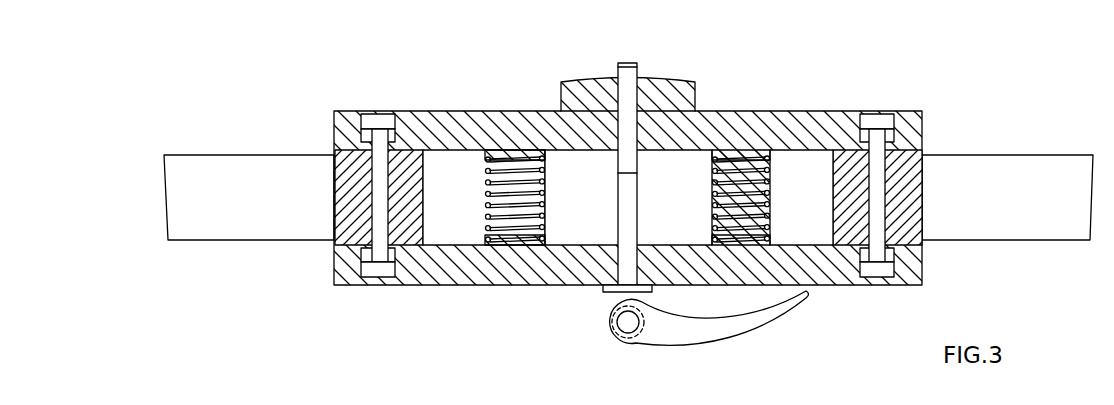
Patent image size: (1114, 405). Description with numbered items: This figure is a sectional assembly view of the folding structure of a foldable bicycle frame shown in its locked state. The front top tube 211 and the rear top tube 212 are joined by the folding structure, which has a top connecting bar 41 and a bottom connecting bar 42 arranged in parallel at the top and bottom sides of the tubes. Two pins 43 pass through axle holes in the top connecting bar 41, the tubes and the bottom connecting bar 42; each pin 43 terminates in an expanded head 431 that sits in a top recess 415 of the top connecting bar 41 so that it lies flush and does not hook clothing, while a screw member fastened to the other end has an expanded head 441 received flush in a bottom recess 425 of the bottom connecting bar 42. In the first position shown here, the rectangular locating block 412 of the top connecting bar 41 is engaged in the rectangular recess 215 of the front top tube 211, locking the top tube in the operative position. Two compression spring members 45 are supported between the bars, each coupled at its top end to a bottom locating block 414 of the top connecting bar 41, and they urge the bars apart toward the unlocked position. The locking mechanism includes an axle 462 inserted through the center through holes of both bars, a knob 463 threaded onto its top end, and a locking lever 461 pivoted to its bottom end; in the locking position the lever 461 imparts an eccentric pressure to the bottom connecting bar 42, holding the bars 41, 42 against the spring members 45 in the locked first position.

The front top tube 211 is at (218, 167).
The rear top tube 212 is at (1033, 153).
The top connecting bar 41 is at (457, 123).
The bottom connecting bar 42 is at (503, 283).
The pin 43 is at (880, 178).
The rectangular locating block 412 is at (334, 149).
The rectangular recess 215 is at (379, 197).
The bottom locating block 414 is at (745, 155).
The top recess 415 is at (405, 117).
The bottom recess 425 is at (365, 288).
The expanded head 431 is at (617, 199).
The expanded head 441 is at (377, 283).
The spring member 45 is at (485, 207).
The locking lever 461 is at (675, 337).
The axle 462 is at (626, 217).
The knob 463 is at (680, 82).